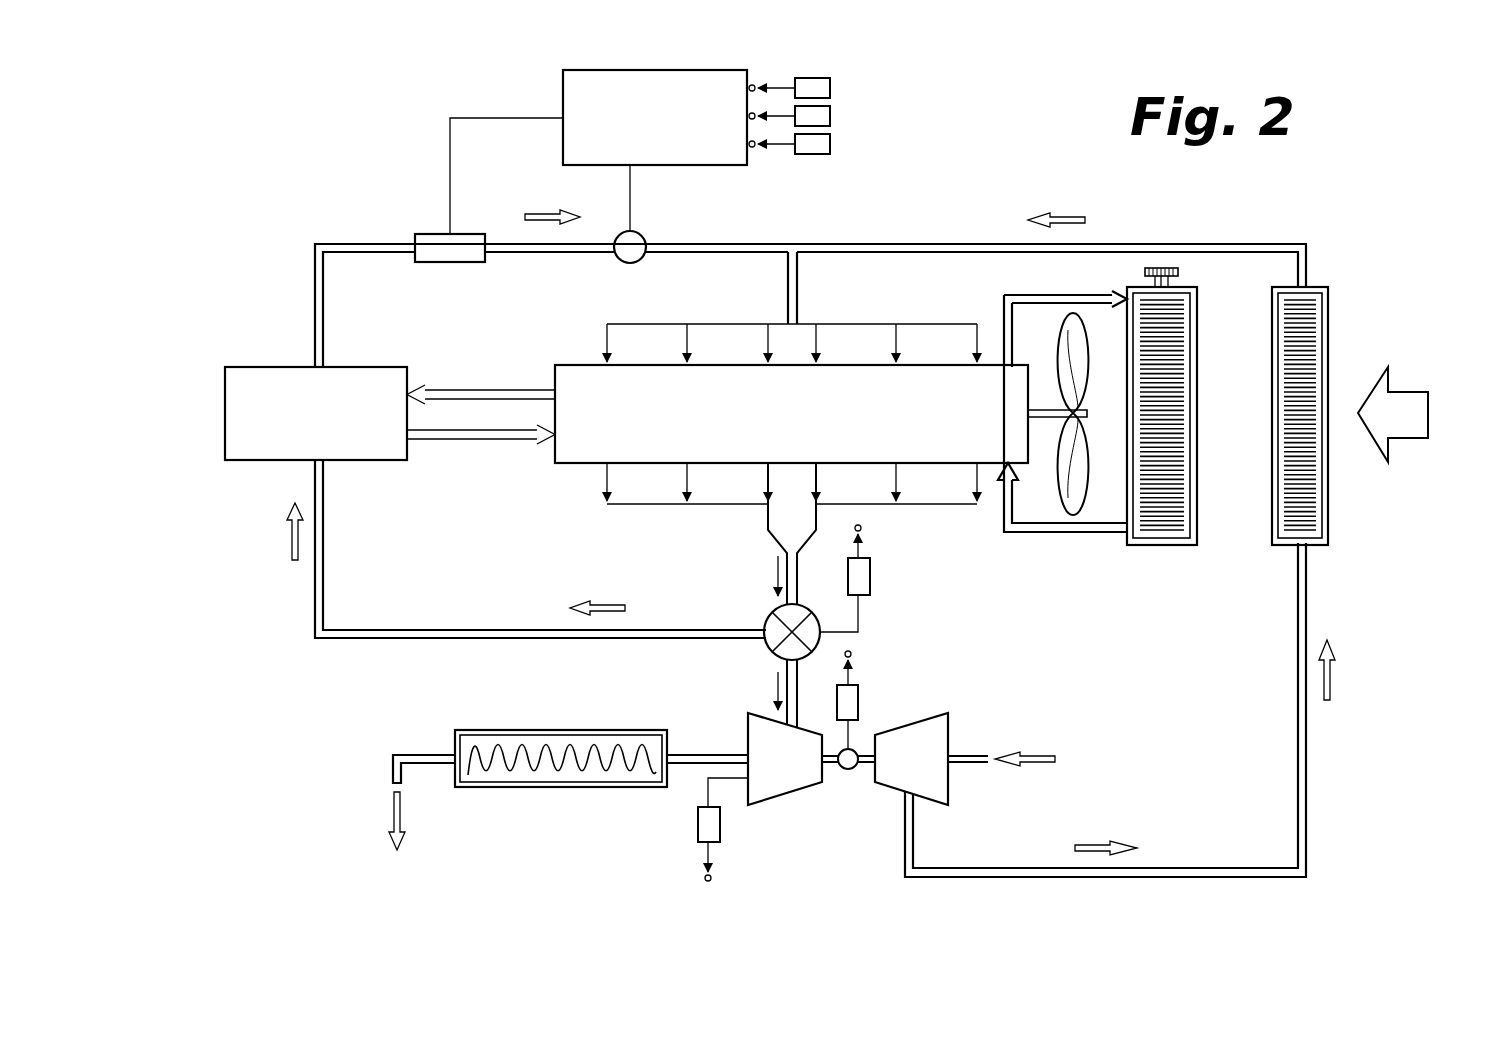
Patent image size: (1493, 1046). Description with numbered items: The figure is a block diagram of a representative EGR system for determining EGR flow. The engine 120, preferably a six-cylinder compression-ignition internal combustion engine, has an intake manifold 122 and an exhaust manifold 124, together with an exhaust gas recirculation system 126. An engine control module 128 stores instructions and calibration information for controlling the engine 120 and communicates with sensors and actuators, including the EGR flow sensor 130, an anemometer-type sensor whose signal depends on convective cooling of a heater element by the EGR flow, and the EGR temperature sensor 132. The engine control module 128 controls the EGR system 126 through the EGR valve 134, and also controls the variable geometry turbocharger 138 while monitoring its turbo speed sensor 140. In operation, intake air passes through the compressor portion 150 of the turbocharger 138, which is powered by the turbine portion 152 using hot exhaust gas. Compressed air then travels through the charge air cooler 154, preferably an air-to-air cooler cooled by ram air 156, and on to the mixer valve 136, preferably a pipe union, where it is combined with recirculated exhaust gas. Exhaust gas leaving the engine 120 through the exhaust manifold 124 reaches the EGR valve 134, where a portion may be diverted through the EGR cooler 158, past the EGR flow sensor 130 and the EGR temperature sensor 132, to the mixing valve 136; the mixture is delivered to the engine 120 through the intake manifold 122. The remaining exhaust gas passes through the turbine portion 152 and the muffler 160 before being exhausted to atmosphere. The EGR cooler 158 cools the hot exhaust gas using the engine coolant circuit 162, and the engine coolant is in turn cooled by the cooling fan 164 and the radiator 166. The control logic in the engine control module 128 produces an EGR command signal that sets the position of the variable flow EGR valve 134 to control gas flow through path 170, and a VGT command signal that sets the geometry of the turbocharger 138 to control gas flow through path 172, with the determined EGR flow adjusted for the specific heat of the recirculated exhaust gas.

The engine 120 is at (565, 465).
The intake manifold 122 is at (590, 310).
The exhaust manifold 124 is at (650, 520).
The exhaust gas recirculation (EGR) system 126 is at (300, 212).
The engine control module (ECM) 128 is at (563, 93).
The EGR flow sensor 130 is at (448, 262).
The EGR temperature sensor 132 is at (646, 238).
The EGR valve 134 is at (770, 652).
The mixer valve 136 is at (815, 232).
The variable geometry turbocharger (VGT) 138 is at (843, 784).
The turbo speed sensor 140 is at (852, 748).
The compressor portion 150 is at (950, 786).
The turbine portion 152 is at (797, 792).
The charge air cooler 154 is at (1312, 548).
The ram air 156 is at (1408, 468).
The EGR cooler 158 is at (225, 400).
The muffler 160 is at (558, 730).
The engine coolant circuit 162 is at (445, 450).
The cooling fan 164 is at (1047, 516).
The radiator 166 is at (1150, 548).
The path 170 is at (526, 549).
The path 172 is at (1120, 710).